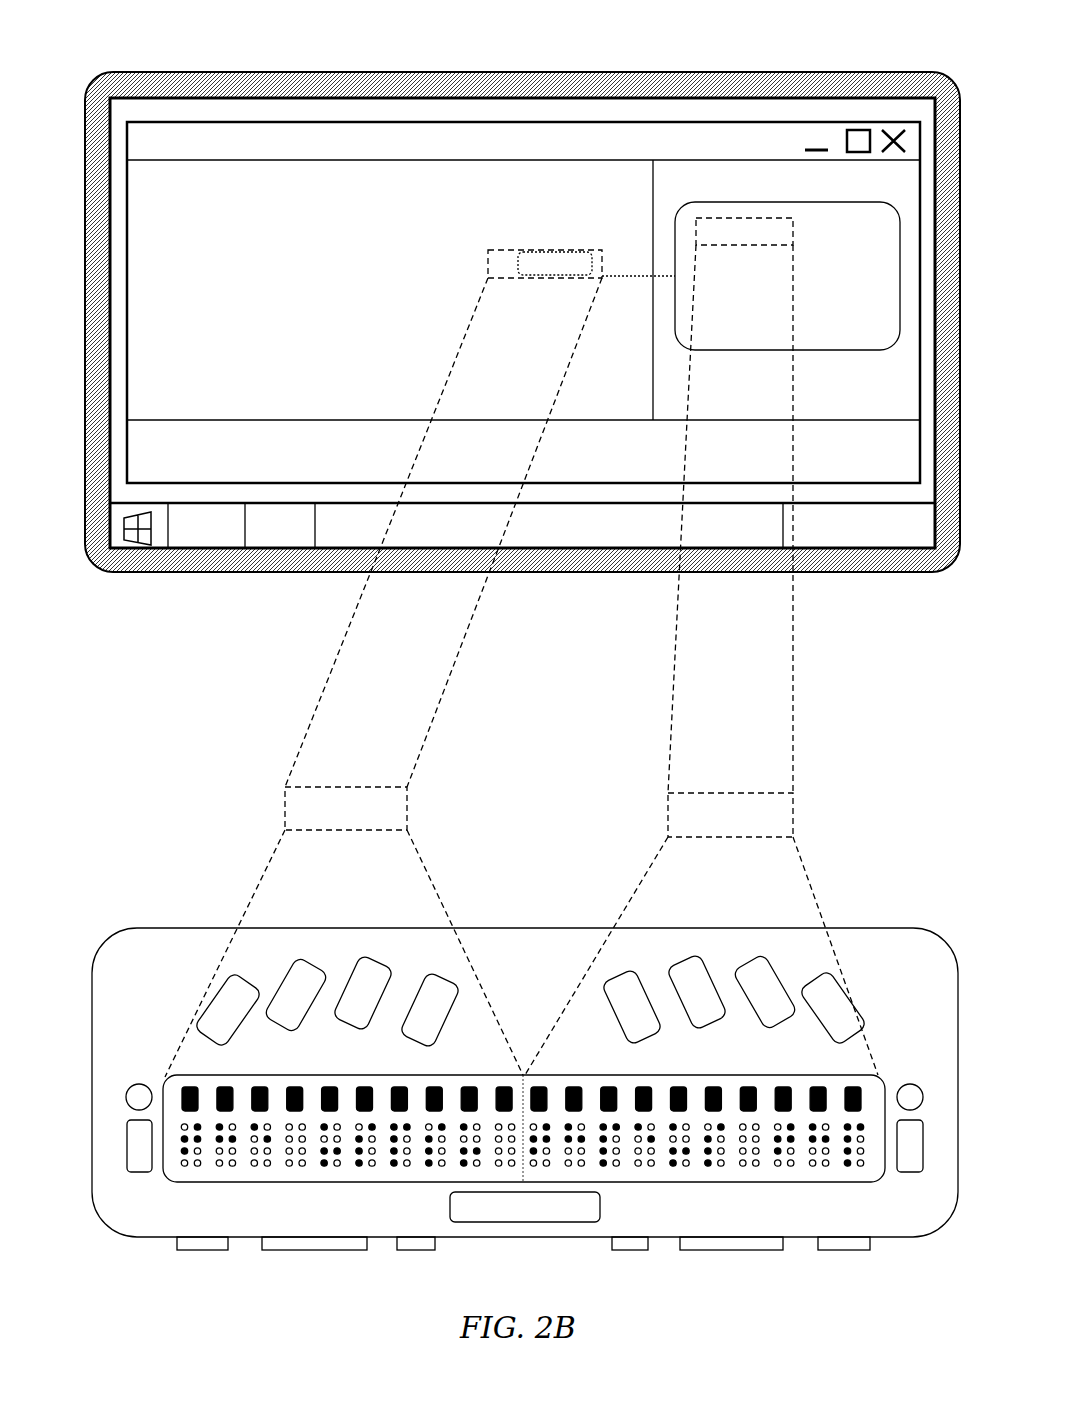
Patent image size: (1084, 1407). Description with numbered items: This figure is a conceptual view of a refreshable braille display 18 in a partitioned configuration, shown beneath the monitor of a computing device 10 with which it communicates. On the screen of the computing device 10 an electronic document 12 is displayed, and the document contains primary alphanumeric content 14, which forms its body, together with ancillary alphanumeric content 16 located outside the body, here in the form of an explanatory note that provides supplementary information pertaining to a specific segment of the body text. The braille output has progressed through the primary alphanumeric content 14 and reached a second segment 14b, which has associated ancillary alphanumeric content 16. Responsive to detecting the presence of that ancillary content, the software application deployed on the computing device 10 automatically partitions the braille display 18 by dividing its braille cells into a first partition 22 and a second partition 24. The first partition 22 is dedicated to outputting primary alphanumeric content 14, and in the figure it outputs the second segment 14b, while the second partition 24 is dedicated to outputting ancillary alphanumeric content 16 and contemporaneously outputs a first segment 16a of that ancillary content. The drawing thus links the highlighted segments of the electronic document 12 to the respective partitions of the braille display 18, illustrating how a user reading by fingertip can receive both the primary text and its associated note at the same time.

The computing device 10 is at (398, 72).
The electronic document 12 is at (622, 122).
The primary alphanumeric content 14 is at (150, 266).
The second segment 14b is at (518, 250).
The ancillary alphanumeric content 16 is at (140, 440).
The first segment 16a is at (750, 218).
The refreshable braille display 18 is at (178, 928).
The first partition 22 is at (303, 1183).
The second partition 24 is at (696, 1183).